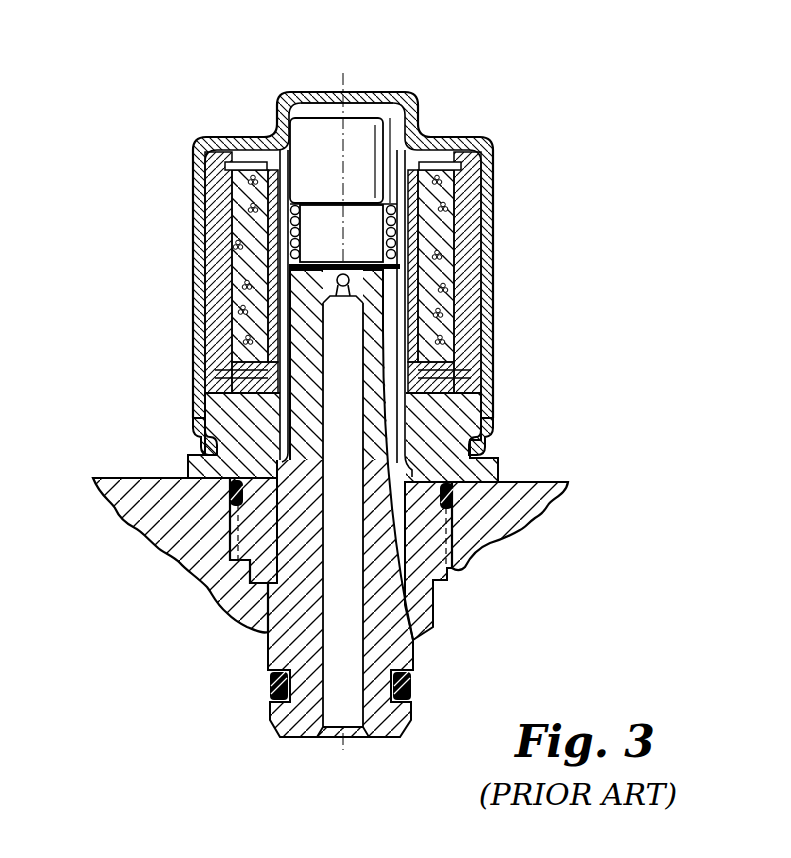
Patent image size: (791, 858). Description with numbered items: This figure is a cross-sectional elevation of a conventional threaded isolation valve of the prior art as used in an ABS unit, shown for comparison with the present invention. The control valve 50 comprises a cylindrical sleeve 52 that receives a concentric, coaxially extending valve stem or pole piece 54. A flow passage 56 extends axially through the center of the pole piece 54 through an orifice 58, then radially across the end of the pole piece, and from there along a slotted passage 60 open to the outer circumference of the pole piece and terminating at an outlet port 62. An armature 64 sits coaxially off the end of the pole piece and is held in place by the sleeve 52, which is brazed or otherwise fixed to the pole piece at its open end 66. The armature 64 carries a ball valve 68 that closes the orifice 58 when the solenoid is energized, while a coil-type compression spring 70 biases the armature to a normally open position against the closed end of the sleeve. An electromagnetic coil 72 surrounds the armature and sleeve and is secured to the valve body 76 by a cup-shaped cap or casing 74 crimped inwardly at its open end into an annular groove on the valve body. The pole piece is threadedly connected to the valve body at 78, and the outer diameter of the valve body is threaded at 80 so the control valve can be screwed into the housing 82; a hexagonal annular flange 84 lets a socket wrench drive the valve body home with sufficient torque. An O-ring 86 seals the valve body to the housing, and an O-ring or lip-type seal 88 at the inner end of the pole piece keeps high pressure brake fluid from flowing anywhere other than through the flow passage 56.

The control valve 50 is at (508, 96).
The cylindrical sleeve 52 is at (392, 95).
The valve stem or pole piece 54 is at (297, 722).
The flow passage 56 is at (352, 700).
The orifice 58 is at (336, 280).
The slotted passage 60 is at (395, 348).
The outlet port 62 is at (435, 627).
The armature 64 is at (316, 125).
The open end 66 is at (320, 727).
The ball valve 68 is at (400, 270).
The coil-type compression spring 70 is at (398, 252).
The electromagnetic coil 72 is at (240, 190).
The cup-shaped cap or casing 74 is at (279, 103).
The valve body 76 is at (230, 408).
The threaded connection 78 is at (430, 470).
The thread 80 is at (447, 580).
The housing 82 is at (140, 513).
The annular flange 84 is at (200, 460).
The O-ring 86 is at (455, 500).
The O-ring or lip-type seal 88 is at (268, 690).